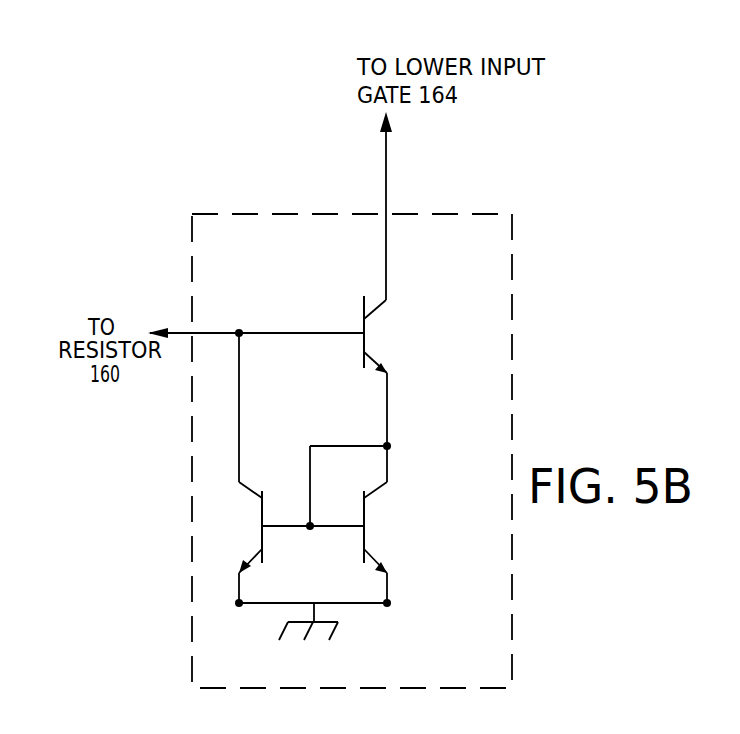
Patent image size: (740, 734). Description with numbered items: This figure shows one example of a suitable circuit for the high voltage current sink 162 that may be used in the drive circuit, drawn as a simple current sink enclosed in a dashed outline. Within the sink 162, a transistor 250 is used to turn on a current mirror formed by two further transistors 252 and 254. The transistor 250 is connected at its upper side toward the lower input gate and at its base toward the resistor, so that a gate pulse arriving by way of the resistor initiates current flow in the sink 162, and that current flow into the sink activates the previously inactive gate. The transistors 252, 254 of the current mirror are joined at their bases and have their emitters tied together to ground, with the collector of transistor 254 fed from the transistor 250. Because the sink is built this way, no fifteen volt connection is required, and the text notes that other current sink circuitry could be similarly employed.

The high voltage current sink 162 is at (227, 212).
The transistor 250 is at (363, 318).
The transistor 252 is at (262, 523).
The transistor 254 is at (364, 522).